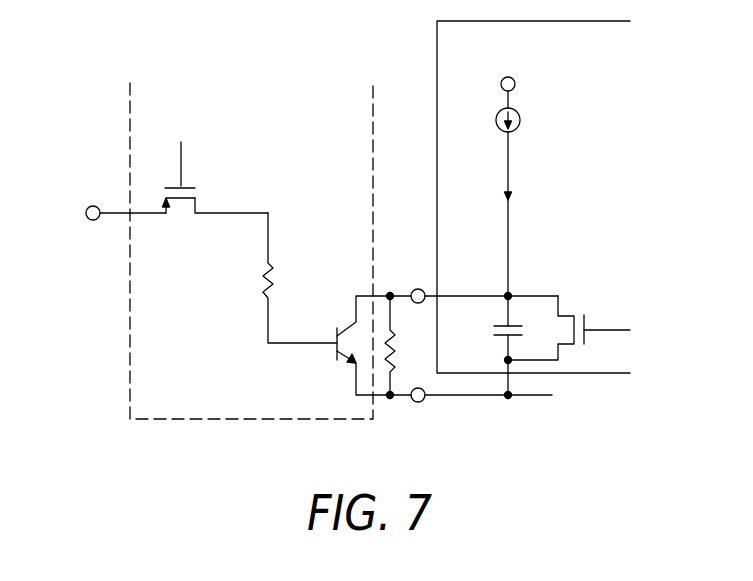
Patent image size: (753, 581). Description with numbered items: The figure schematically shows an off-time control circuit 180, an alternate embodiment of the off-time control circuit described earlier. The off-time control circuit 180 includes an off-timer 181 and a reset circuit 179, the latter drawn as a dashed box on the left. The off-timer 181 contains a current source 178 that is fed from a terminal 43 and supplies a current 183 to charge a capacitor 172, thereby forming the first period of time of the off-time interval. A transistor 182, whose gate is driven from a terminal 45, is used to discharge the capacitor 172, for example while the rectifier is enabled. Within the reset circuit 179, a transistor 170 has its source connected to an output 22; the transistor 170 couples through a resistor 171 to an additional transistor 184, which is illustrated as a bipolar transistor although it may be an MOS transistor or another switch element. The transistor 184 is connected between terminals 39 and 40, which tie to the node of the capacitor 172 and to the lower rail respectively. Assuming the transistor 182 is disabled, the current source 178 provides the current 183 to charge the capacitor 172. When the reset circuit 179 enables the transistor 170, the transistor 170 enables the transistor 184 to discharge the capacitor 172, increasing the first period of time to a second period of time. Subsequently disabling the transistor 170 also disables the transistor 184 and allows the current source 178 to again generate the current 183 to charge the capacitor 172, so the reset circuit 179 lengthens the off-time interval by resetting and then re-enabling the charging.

The output 22 is at (87, 219).
The terminal 39 is at (421, 289).
The terminal 40 is at (423, 400).
The supply terminal 43 is at (514, 80).
The gate terminal 45 is at (614, 330).
The transistor 170 is at (178, 208).
The resistor 171 is at (272, 290).
The capacitor 172 is at (503, 337).
The current source 178 is at (519, 124).
The reset circuit 179 is at (130, 401).
The off-time control circuit 180 is at (501, 480).
The off-timer 181 is at (437, 130).
The transistor 182 is at (570, 313).
The current 183 is at (512, 198).
The transistor 184 is at (337, 348).